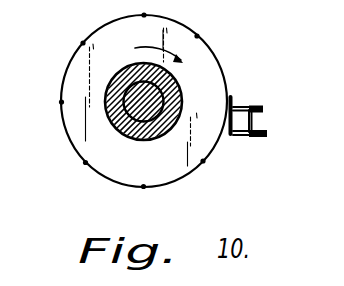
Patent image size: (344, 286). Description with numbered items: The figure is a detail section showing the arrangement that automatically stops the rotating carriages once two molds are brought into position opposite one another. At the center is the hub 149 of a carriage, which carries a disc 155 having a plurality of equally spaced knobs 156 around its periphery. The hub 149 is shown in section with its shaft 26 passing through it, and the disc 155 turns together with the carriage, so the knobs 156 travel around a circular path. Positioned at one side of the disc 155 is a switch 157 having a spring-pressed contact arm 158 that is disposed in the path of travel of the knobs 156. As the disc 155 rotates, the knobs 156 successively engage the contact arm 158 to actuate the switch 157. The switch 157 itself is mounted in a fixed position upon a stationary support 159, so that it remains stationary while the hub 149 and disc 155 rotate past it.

The hub 149 is at (116, 75).
The hub shaft 26 is at (182, 82).
The disc 155 is at (163, 181).
The knobs 156 is at (83, 162).
The switch 157 is at (231, 134).
The spring-pressed contact arm 158 is at (233, 99).
The stationary support 159 is at (257, 136).